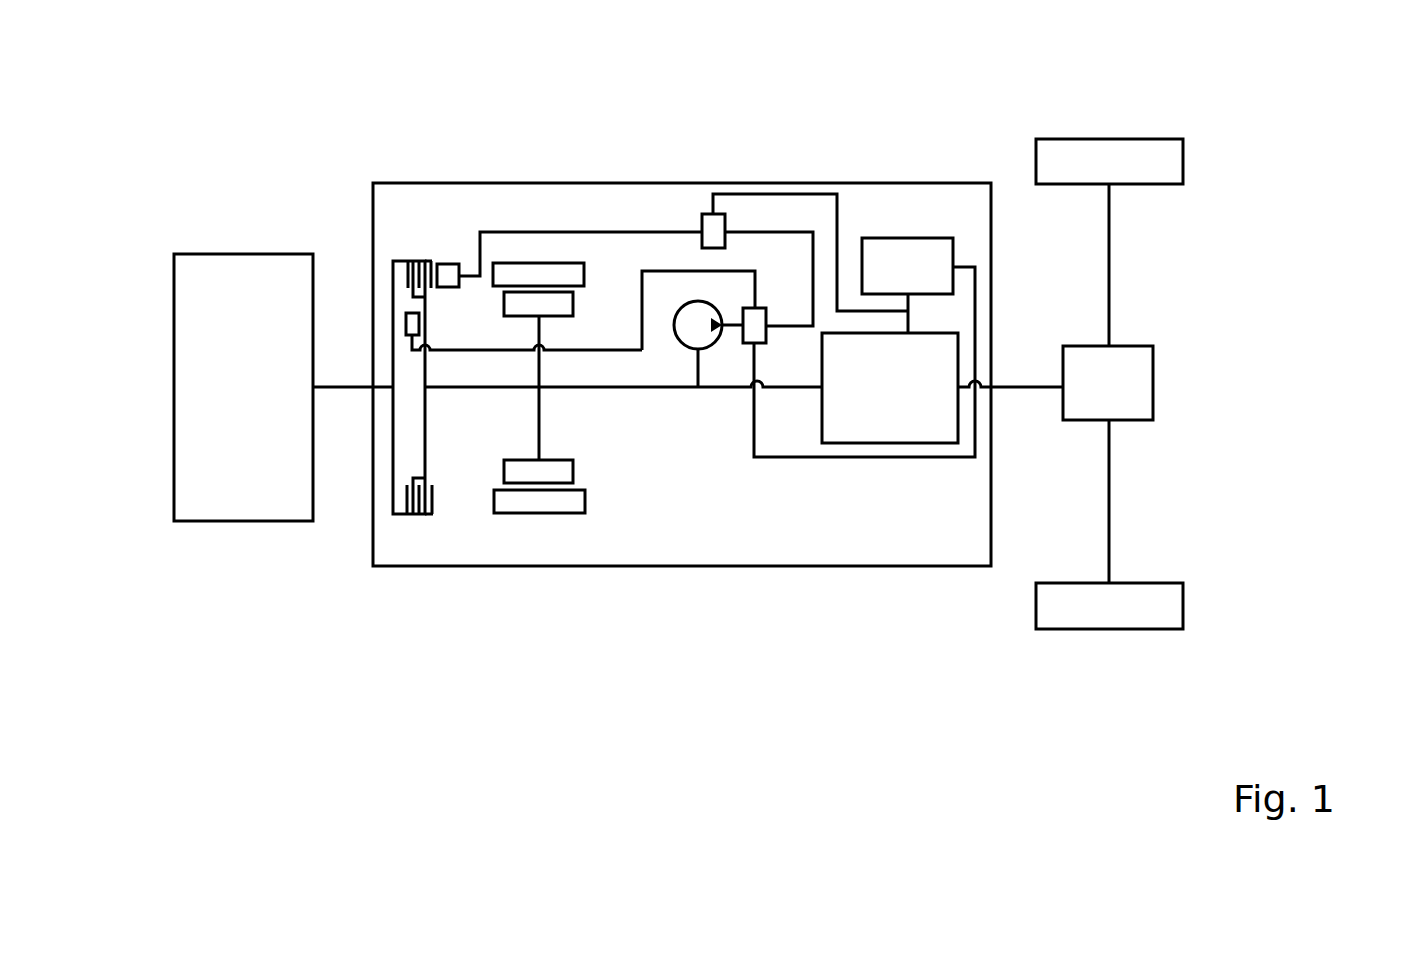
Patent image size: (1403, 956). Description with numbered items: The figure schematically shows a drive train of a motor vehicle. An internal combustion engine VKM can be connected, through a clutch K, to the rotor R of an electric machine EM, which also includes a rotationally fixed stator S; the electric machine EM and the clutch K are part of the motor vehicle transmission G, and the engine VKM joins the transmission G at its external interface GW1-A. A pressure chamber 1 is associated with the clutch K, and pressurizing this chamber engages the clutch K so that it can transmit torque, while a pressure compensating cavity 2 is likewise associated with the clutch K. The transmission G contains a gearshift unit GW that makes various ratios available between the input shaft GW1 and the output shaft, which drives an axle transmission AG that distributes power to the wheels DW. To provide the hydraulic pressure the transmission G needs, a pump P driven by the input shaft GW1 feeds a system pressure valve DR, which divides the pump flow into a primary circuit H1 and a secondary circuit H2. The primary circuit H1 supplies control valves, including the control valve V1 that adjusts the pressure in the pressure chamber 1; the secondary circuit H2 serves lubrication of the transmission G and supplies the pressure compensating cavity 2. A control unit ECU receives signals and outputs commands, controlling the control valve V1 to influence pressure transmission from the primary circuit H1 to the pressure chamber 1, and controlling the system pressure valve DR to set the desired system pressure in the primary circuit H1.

The motor vehicle transmission G is at (958, 573).
The internal combustion engine VKM is at (243, 540).
The external interface GW1-A is at (355, 385).
The clutch K is at (407, 532).
The input shaft GW1 is at (607, 388).
The pressure chamber 1 is at (455, 258).
The pressure compensating cavity 2 is at (405, 310).
The electric machine EM is at (541, 528).
The stator S is at (523, 502).
The rotor R is at (556, 472).
The secondary circuit H2 is at (668, 271).
The pump P is at (685, 350).
The system pressure valve DR is at (743, 348).
The control valve V1 is at (702, 207).
The primary circuit H1 is at (787, 325).
The control unit ECU is at (917, 257).
The gearshift unit GW is at (878, 427).
The axle transmission AG is at (1165, 380).
The wheels DW is at (1197, 146).